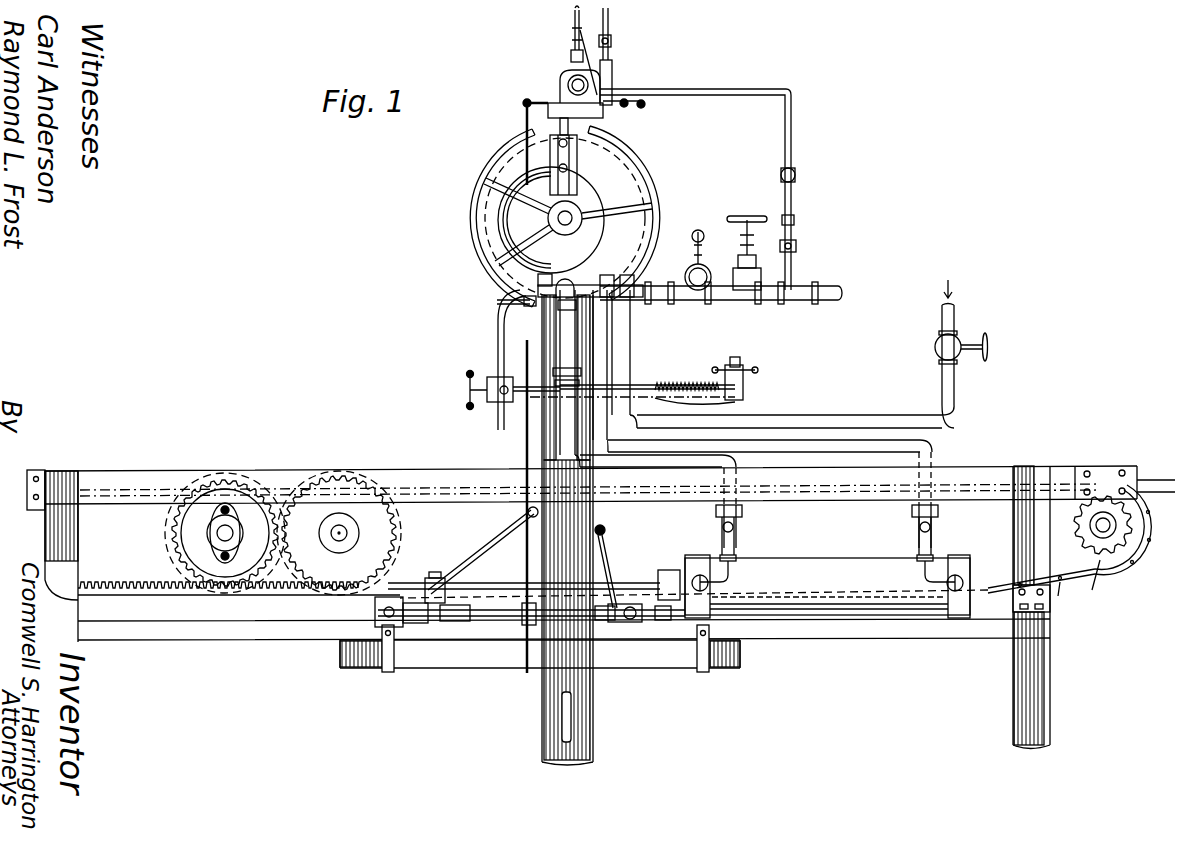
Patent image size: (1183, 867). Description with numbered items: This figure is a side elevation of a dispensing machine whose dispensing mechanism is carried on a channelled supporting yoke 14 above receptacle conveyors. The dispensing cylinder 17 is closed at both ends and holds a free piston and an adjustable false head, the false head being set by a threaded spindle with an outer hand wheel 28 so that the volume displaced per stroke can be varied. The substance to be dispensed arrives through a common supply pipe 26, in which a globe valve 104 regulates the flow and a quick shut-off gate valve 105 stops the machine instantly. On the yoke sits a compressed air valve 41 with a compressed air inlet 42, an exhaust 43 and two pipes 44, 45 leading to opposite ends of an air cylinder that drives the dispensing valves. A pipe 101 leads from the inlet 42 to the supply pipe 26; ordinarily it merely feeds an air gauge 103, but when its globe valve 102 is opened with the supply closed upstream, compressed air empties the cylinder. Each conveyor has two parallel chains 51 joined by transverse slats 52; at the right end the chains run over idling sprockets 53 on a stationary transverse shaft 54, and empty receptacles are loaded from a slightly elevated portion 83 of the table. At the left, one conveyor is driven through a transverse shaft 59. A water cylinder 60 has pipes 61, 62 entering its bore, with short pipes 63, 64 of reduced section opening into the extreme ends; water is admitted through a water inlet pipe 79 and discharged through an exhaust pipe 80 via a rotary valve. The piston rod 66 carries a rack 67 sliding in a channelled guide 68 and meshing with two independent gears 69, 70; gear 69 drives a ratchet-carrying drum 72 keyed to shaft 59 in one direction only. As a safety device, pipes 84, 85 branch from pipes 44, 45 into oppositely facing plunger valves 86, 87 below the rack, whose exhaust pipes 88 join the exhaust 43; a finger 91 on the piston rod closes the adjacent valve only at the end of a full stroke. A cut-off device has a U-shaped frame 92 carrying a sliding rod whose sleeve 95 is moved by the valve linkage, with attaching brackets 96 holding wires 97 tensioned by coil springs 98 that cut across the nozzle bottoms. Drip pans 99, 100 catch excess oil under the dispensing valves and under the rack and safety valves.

The supporting yoke 14 is at (480, 367).
The cylinder 17 is at (485, 205).
The supply pipe 26 is at (800, 300).
The hand wheel 28 is at (492, 232).
The compressed air valve 41 is at (565, 78).
The compressed air inlet 42 is at (570, 56).
The exhaust 43 is at (545, 103).
The pipe 44 is at (616, 106).
The pipe 45 is at (642, 107).
The chains 51 is at (1055, 586).
The slats 52 is at (985, 590).
The idling sprockets 53 is at (1135, 522).
The transverse shaft 54 is at (1118, 548).
The transverse shaft 59 is at (216, 532).
The water cylinder 60 is at (812, 575).
The pipe 61 is at (497, 330).
The pipe 62 is at (612, 322).
The short pipe 63 is at (738, 575).
The short pipe 64 is at (942, 572).
The piston rod 66 is at (632, 583).
The rack 67 is at (92, 580).
The channelled guide 68 is at (192, 612).
The gear 69 is at (178, 520).
The gear 70 is at (402, 542).
The ratchet-carrying drum 72 is at (212, 548).
The water inlet pipe 79 is at (640, 278).
The exhaust pipe 80 is at (578, 710).
The elevated portion 83 is at (1152, 480).
The pipe 84 is at (602, 560).
The pipe 85 is at (512, 556).
The plunger valve 86 is at (620, 616).
The plunger valve 87 is at (400, 618).
The exhaust pipes 88 is at (458, 600).
The finger 91 is at (436, 620).
The frame 92 is at (672, 384).
The sleeve 95 is at (468, 430).
The attaching brackets 96 is at (745, 384).
The wires 97 is at (640, 398).
The coil springs 98 is at (738, 403).
The drip pan 99 is at (500, 300).
The drip pan 100 is at (668, 662).
The pipe 101 is at (722, 92).
The globe valve 102 is at (797, 175).
The air gauge 103 is at (612, 72).
The globe valve 104 is at (748, 300).
The gate valve 105 is at (712, 300).